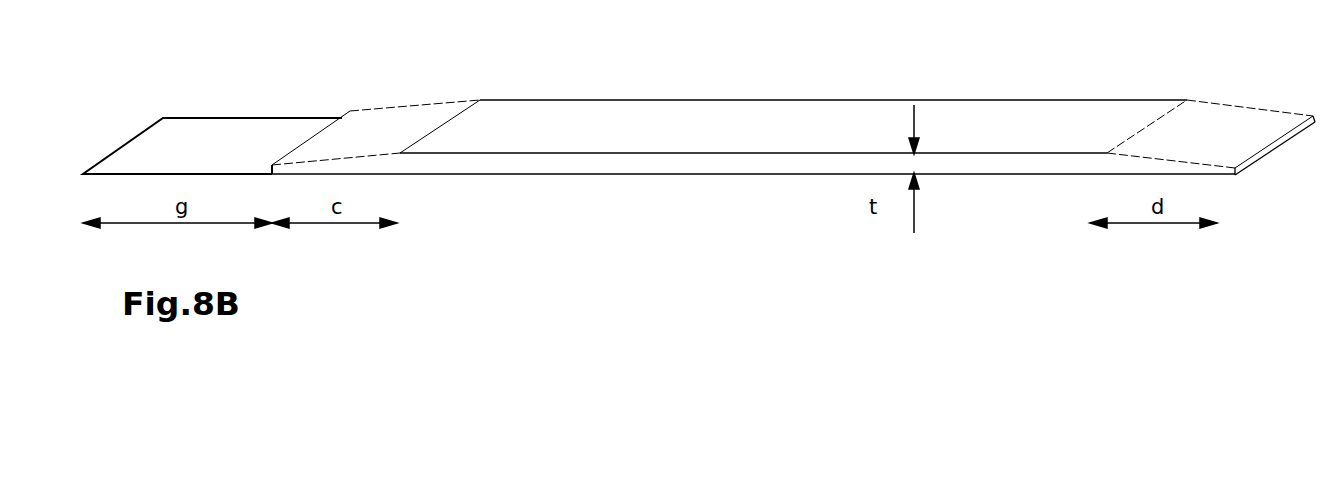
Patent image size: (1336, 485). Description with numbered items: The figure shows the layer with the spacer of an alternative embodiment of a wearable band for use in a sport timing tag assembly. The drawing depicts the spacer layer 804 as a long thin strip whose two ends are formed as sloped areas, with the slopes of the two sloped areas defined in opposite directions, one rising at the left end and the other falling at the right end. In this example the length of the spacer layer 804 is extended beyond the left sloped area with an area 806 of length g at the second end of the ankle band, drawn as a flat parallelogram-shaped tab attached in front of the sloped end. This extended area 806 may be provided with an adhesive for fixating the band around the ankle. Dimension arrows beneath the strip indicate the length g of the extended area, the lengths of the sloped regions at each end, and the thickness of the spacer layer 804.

The extended area 806 is at (212, 123).
The spacer layer 804 is at (817, 111).